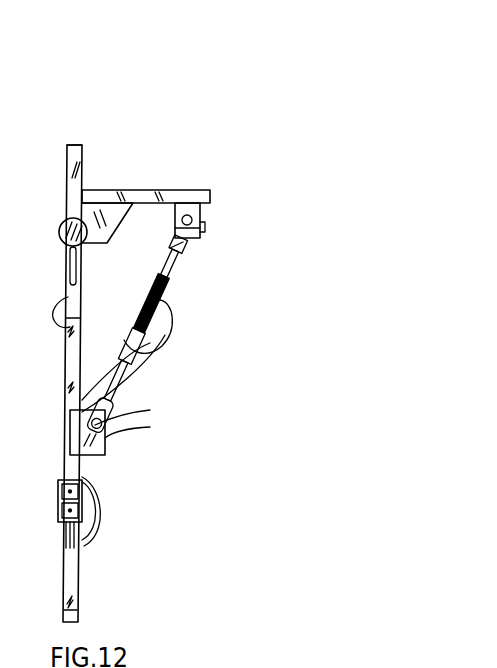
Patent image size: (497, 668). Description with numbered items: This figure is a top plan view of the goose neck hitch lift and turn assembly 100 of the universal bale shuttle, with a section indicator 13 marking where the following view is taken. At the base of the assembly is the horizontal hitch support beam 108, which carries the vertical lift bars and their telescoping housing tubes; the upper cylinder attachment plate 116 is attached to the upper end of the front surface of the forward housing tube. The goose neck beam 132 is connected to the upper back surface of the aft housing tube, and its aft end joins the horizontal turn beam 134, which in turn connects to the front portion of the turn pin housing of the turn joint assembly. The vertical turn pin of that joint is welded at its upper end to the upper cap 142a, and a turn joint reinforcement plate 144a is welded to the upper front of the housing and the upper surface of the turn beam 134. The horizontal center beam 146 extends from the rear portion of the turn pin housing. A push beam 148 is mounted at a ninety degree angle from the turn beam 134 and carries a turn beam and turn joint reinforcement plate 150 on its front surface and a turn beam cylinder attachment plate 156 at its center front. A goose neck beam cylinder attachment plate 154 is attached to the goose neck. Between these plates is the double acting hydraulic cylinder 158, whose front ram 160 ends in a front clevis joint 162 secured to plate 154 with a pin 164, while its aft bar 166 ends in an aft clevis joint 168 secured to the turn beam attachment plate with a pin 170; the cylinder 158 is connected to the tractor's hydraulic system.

The goose neck hitch lift and turn assembly 100 is at (300, 100).
The horizontal hitch support beam 108 is at (78, 605).
The upper cylinder attachment plate 116 is at (80, 548).
The goose neck beam 132 is at (150, 343).
The horizontal turn beam 134 is at (68, 318).
The upper cap 142a is at (60, 226).
The turn joint reinforcement plate 144a is at (112, 275).
The horizontal center beam 146 is at (82, 162).
The push beam 148 is at (213, 197).
The turn beam and turn joint reinforcement plate 150 is at (108, 194).
The goose neck beam cylinder attachment plate 154 is at (105, 455).
The turn beam cylinder attachment plate 156 is at (198, 208).
The double acting hydraulic cylinder 158 is at (150, 328).
The front ram 160 is at (150, 388).
The front clevis joint 162 is at (150, 410).
The pin 164 is at (150, 427).
The aft bar 166 is at (178, 248).
The aft clevis joint 168 is at (188, 238).
The pin 170 is at (200, 227).
The section line 13- 13 is at (250, 183).